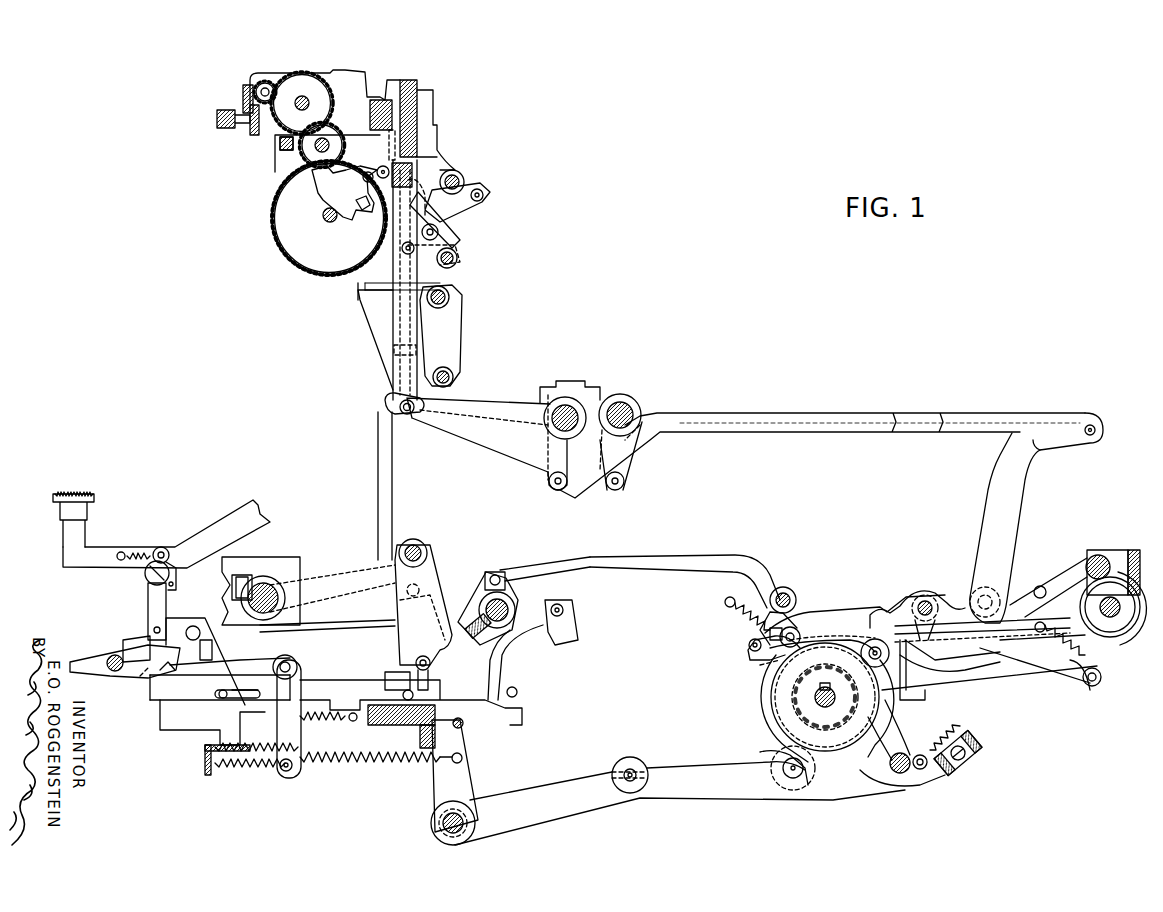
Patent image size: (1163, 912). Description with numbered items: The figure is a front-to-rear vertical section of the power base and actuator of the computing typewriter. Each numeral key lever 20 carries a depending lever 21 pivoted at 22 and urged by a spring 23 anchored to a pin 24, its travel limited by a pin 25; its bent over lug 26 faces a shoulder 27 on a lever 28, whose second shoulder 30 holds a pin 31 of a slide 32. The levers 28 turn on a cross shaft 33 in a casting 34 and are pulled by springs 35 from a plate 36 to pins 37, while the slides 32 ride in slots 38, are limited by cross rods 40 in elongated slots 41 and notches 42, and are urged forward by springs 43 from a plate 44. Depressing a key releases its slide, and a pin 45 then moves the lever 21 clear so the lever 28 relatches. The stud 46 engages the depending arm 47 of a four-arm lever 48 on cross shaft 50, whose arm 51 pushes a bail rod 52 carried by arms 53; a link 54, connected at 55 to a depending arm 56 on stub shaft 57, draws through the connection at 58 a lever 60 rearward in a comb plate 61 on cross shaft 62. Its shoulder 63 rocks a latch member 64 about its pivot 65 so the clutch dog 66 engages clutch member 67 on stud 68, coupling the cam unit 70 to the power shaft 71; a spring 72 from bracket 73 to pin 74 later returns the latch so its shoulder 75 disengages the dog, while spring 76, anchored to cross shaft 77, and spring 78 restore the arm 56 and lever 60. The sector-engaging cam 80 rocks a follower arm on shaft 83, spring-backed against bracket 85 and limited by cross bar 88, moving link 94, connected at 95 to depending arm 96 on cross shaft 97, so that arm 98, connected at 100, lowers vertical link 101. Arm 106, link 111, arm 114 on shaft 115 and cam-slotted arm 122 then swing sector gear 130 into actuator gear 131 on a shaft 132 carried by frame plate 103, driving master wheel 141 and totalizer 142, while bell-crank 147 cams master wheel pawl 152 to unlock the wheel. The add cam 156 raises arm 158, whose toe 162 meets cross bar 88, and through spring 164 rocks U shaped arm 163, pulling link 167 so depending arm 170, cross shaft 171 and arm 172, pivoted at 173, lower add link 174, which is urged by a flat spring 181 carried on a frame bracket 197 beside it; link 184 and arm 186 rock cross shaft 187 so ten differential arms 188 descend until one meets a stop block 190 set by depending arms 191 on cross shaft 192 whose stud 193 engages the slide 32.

The numeral key lever 20 is at (63, 550).
The depending lever 21 is at (150, 600).
The pivot 22 is at (150, 580).
The spring 23 is at (140, 550).
The pin 24 is at (118, 558).
The pin 25 is at (172, 567).
The bent over lug 26 is at (140, 678).
The shoulder 27 is at (160, 672).
The lever 28 is at (345, 722).
The shoulder 30 is at (212, 652).
The pin 31 is at (230, 654).
The slide 32 is at (130, 645).
The cross shaft 33 is at (290, 658).
The casting 34 is at (200, 732).
The spring 35 is at (262, 768).
The plate 36 is at (206, 776).
The pin 37 is at (294, 770).
The slot 38 is at (380, 670).
The cross rod 40 is at (222, 698).
The elongated slot 41 is at (242, 698).
The notch 42 is at (440, 690).
The spring 43 is at (355, 732).
The plate 44 is at (265, 728).
The pin 45 is at (192, 625).
The stud 46 is at (518, 690).
The depending arm 47 is at (500, 660).
The four-arm lever 48 is at (565, 645).
The cross shaft 50 is at (509, 610).
The arm 51 is at (475, 598).
The bail rod 52 is at (498, 573).
The arm 53 is at (515, 570).
The link 54 is at (668, 566).
The connection 55 is at (768, 633).
The depending arm 56 is at (795, 627).
The stub shaft 57 is at (780, 590).
The connection 58 is at (762, 660).
The lever 60 is at (845, 612).
The comb plate 61 is at (980, 622).
The cross shaft 62 is at (930, 600).
The shoulder 63 is at (950, 655).
The latch member 64 is at (950, 683).
The pivot 65 is at (898, 775).
The clutch dog 66 is at (889, 730).
The clutch member 67 is at (838, 715).
The stud 68 is at (836, 693).
The cam unit 70 is at (752, 741).
The power shaft 71 is at (820, 678).
The spring 72 is at (950, 720).
The bracket 73 is at (975, 735).
The pin 74 is at (922, 772).
The shoulder 75 is at (912, 670).
The spring 76 is at (755, 625).
The cross shaft 77 is at (725, 598).
The spring 78 is at (748, 645).
The sector-engaging cam 80 is at (847, 745).
The shaft 83 is at (1115, 620).
The bracket 85 is at (1148, 600).
The cross bar 88 is at (1098, 553).
The link 94 is at (648, 460).
The connection 95 is at (615, 490).
The depending arm 96 is at (622, 490).
The cross shaft 97 is at (624, 405).
The forwardly extending arm 98 is at (515, 445).
The connection 100 is at (410, 416).
The vertical link 101 is at (415, 342).
The frame plate 103 is at (280, 178).
The arm 106 is at (460, 258).
The link 111 is at (458, 215).
The arm 114 is at (470, 200).
The shaft 115 is at (457, 180).
The arm 122 is at (455, 240).
The sector gear 130 is at (400, 184).
The actuator gear 131 is at (312, 252).
The shaft 132 is at (326, 224).
The master wheel 141 is at (292, 165).
The totalizer 142 is at (233, 101).
The bell-crank 147 is at (363, 222).
The master wheel pawl 152 is at (330, 205).
The add cam 156 is at (775, 760).
The arm 158 is at (1010, 665).
The toe 162 is at (1116, 550).
The U shaped arm 163 is at (1000, 528).
The spring 164 is at (1090, 690).
The link 167 is at (784, 413).
The depending arm 170 is at (565, 490).
The cross shaft 171 is at (568, 410).
The forwardly extending arm 172 is at (520, 408).
The pivotal connection 173 is at (385, 406).
The add link 174 is at (395, 358).
The flat spring 181 is at (450, 285).
The link 184 is at (380, 487).
The arm 186 is at (342, 580).
The cross shaft 187 is at (266, 582).
The differential arm 188 is at (335, 630).
The stop block 190 is at (423, 612).
The depending arm 191 is at (430, 580).
The cross shaft 192 is at (425, 540).
The stud 193 is at (422, 660).
The plate 197 is at (373, 318).